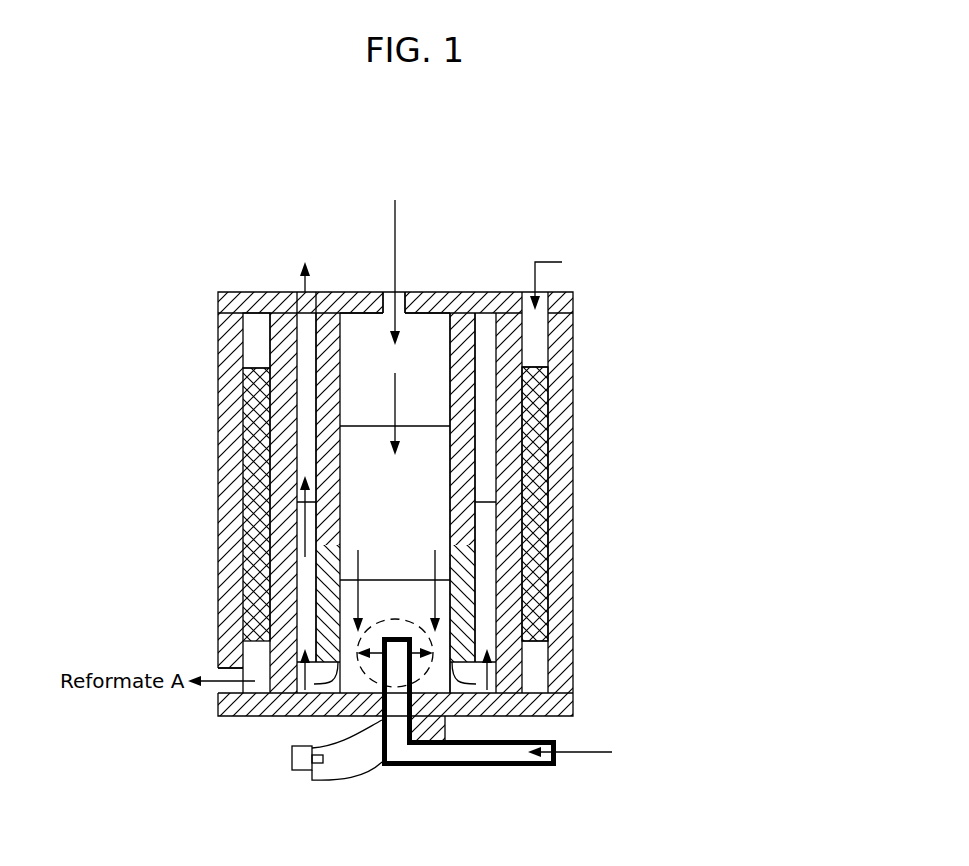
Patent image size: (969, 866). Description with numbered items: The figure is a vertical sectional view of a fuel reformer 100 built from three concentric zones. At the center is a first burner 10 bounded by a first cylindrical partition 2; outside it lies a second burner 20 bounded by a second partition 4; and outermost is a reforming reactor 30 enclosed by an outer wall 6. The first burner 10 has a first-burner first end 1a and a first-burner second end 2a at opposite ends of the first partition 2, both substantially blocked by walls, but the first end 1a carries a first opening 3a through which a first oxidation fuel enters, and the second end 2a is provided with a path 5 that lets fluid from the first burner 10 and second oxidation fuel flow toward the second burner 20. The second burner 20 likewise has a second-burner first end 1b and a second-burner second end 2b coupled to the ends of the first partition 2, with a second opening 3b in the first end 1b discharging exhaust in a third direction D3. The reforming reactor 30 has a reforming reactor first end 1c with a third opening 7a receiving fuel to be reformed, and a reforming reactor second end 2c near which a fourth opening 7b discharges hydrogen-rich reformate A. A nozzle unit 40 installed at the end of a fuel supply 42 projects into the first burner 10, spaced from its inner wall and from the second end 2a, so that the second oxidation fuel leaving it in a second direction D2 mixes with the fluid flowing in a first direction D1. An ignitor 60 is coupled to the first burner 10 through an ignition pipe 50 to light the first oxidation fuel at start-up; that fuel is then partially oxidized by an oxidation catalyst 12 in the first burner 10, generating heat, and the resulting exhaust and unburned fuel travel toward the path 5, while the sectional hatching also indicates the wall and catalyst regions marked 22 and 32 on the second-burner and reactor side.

The fuel reformer 100 is at (133, 184).
The first-burner first end 1a is at (357, 292).
The second-burner first end 1b is at (488, 292).
The reforming reactor first end 1c is at (253, 293).
The first cylindrical partition 2 is at (338, 432).
The first-burner second end 2a is at (372, 707).
The second-burner second end 2b is at (465, 718).
The reforming reactor second end 2c is at (253, 718).
The first opening 3a is at (405, 292).
The second opening 3b is at (297, 292).
The second partition 4 is at (278, 410).
The path 5 is at (490, 683).
The outer wall 6 is at (243, 341).
The third opening 7a is at (538, 308).
The fourth opening 7b is at (233, 690).
The first burner 10 is at (450, 452).
The oxidation catalyst 12 is at (440, 487).
The second burner 20 is at (488, 528).
The partition wall 22 is at (488, 560).
The reforming reactor 30 is at (548, 594).
The outer housing wall 32 is at (540, 623).
The nozzle unit 40 is at (418, 720).
The fuel supply 42 is at (548, 730).
The ignition pipe 50 is at (357, 700).
The ignitor 60 is at (300, 771).
The first direction D1 is at (445, 396).
The second direction D2 is at (370, 655).
The third direction D3 is at (312, 516).